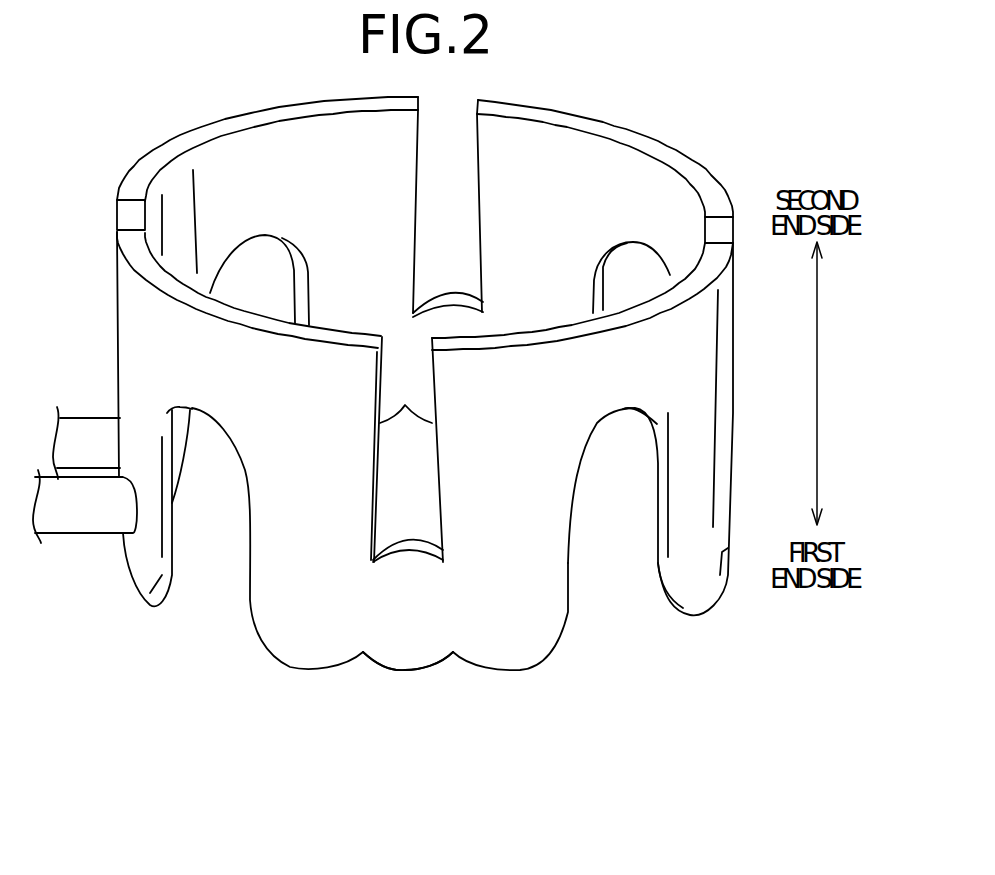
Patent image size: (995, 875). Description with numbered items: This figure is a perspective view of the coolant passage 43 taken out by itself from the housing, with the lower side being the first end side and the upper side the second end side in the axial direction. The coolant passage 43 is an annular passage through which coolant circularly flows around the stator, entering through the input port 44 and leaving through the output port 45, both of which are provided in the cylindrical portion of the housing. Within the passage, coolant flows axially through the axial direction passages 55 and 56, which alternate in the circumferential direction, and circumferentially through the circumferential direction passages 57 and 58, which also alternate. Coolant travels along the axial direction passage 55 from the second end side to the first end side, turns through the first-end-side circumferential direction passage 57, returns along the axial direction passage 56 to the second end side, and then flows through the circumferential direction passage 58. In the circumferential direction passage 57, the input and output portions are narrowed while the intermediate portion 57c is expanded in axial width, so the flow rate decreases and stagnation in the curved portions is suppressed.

The coolant passage 43 is at (507, 670).
The input port 44 is at (68, 537).
The output port 45 is at (88, 417).
The axial direction passage 55 is at (273, 618).
The axial direction passage 56 is at (535, 558).
The circumferential direction passage 57 is at (407, 643).
The intermediate portion 57c is at (408, 661).
The circumferential direction passage 58 is at (607, 392).